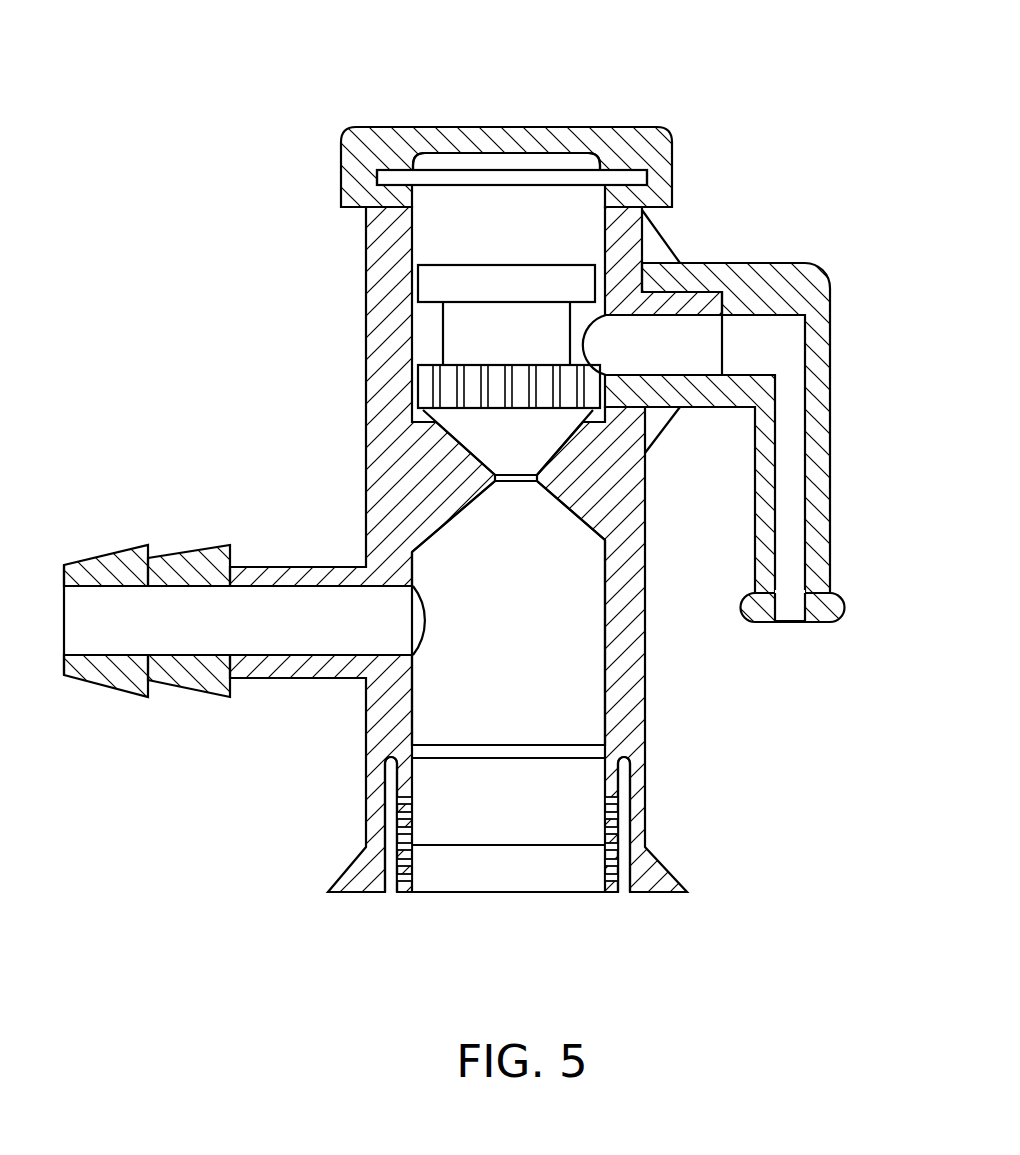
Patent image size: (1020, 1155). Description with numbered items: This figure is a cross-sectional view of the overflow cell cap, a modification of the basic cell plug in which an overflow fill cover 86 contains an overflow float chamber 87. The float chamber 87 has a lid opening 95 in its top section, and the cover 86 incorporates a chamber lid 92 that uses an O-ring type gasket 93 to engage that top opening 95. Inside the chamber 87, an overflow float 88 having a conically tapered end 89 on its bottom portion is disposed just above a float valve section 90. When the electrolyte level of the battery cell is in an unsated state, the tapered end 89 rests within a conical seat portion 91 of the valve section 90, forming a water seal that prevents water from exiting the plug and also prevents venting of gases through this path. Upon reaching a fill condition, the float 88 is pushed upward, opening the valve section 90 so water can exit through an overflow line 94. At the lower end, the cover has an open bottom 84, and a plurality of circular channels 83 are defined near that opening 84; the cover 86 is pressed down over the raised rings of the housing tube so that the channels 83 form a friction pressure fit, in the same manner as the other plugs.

The overflow fill cover 86 is at (782, 53).
The chamber lid 92 is at (540, 125).
The O-ring type gasket 93 is at (674, 177).
The lid opening 95 is at (458, 166).
The overflow line 94 is at (832, 405).
The overflow float 88 is at (443, 337).
The conically tapered end 89 is at (560, 447).
The conical seat portion 91 is at (527, 483).
The float valve section 90 is at (580, 523).
The overflow float chamber 87 is at (500, 662).
The open bottom 84 is at (520, 895).
The circular channels 83 is at (618, 818).